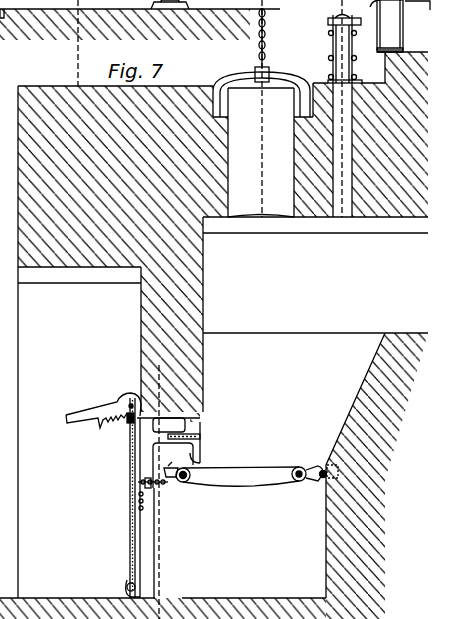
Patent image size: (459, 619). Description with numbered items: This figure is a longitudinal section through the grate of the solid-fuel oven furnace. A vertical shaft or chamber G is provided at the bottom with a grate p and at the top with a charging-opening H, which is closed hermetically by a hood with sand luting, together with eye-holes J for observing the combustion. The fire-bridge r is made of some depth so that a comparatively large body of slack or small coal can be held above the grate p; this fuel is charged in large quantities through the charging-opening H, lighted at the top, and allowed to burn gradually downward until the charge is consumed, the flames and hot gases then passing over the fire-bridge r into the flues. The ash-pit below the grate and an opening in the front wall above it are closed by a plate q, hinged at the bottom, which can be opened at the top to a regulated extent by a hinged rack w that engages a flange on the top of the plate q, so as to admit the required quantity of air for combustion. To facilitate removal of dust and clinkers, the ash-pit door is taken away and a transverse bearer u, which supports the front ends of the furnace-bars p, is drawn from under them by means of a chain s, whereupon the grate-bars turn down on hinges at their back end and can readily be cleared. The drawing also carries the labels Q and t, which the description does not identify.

The charging-opening H is at (261, 152).
The eye-holes J is at (345, 116).
The box Q is at (386, 26).
The vertical shaft or chamber G is at (315, 314).
The fire-bridge r is at (377, 476).
The hinged rack w is at (102, 410).
The plate q is at (128, 498).
The chain s is at (168, 508).
The transverse bearer u is at (165, 473).
The pawl t is at (171, 465).
The grate p is at (257, 475).